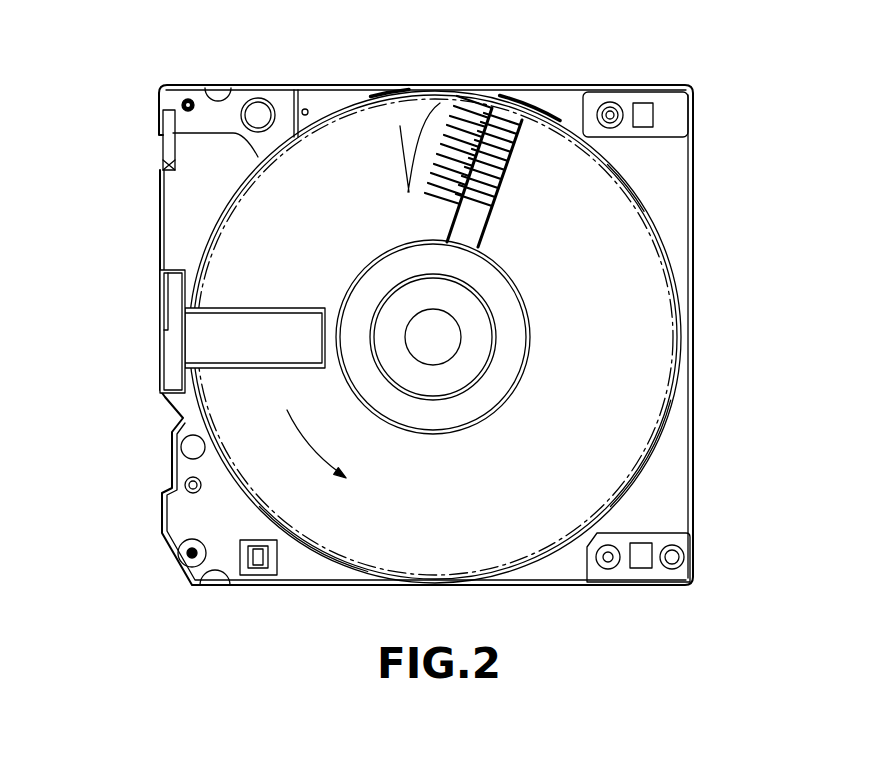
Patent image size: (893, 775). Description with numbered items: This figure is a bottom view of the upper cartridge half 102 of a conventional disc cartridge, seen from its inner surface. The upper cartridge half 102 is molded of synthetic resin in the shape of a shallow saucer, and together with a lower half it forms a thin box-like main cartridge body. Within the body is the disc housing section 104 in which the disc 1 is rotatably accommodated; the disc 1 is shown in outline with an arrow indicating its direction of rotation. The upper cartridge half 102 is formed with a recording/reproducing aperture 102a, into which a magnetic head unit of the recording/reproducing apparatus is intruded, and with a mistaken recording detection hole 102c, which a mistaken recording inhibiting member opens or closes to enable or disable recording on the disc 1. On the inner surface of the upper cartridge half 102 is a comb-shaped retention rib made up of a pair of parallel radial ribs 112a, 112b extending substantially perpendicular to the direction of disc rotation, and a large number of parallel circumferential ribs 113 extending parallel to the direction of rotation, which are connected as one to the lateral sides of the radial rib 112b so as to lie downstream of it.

The disc 1 is at (670, 412).
The upper cartridge half 102 is at (667, 507).
The recording/reproducing aperture 102a is at (238, 362).
The mistaken recording detection hole 102c is at (648, 112).
The disc housing section 104 is at (676, 283).
The radial rib 112a is at (530, 127).
The radial rib 112b is at (487, 107).
The circumferential ribs 113 is at (414, 145).